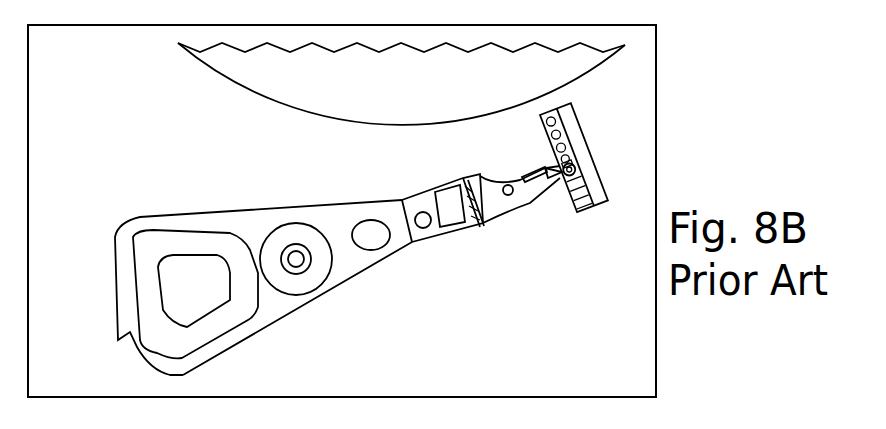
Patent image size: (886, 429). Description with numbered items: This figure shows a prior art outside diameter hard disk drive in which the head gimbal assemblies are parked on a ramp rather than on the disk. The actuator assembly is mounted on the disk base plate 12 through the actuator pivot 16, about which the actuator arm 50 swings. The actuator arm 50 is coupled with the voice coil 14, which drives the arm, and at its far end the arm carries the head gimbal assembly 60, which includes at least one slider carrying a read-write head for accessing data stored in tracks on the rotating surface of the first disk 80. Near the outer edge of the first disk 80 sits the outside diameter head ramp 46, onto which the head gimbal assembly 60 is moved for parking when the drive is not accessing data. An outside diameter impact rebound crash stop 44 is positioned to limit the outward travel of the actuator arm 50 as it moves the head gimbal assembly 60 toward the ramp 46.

The disk base plate 12 is at (564, 314).
The voice coil 14 is at (233, 320).
The actuator pivot 16 is at (293, 252).
The outside diameter impact rebound crash stop 44 is at (120, 343).
The outside diameter head ramp 46 is at (590, 143).
The actuator arm 50 is at (355, 283).
The head gimbal assembly 60 is at (493, 182).
The first disk 80 is at (248, 92).